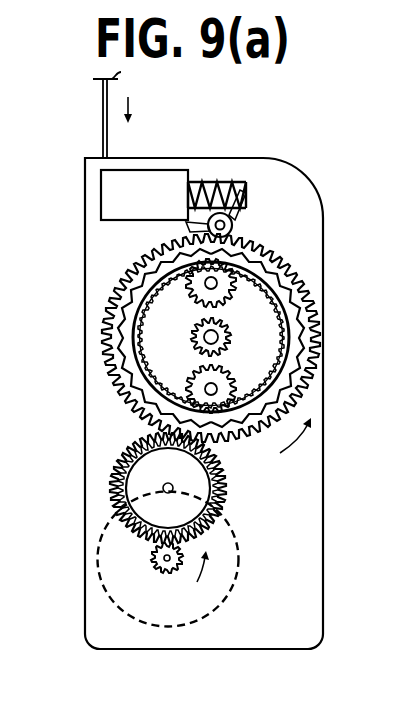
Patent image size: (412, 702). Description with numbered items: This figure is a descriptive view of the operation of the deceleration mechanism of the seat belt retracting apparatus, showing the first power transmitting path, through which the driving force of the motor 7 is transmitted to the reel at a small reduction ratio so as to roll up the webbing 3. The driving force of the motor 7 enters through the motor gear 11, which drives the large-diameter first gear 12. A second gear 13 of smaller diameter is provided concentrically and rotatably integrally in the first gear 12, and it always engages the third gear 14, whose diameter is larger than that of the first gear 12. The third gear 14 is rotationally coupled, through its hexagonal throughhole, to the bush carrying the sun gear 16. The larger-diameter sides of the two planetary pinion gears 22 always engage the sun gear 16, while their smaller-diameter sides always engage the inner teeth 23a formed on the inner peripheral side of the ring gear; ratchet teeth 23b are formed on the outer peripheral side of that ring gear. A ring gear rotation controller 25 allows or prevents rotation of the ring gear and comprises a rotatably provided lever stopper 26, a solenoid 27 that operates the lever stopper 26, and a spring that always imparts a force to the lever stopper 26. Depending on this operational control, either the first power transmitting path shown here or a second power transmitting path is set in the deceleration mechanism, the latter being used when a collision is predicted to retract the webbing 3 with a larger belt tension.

The webbing 3 is at (103, 113).
The motor 7 is at (134, 620).
The motor gear 11 is at (162, 572).
The first gear 12 is at (112, 495).
The second gear 13 is at (140, 525).
The third gear 14 is at (188, 367).
The sun gear 16 is at (192, 340).
The planetary pinion gears 22 is at (250, 272).
The inner teeth 23a is at (266, 308).
The ratchet teeth 23b is at (123, 307).
The ring gear rotation controller 25 is at (216, 160).
The lever stopper 26 is at (234, 219).
The solenoid 27 is at (122, 200).